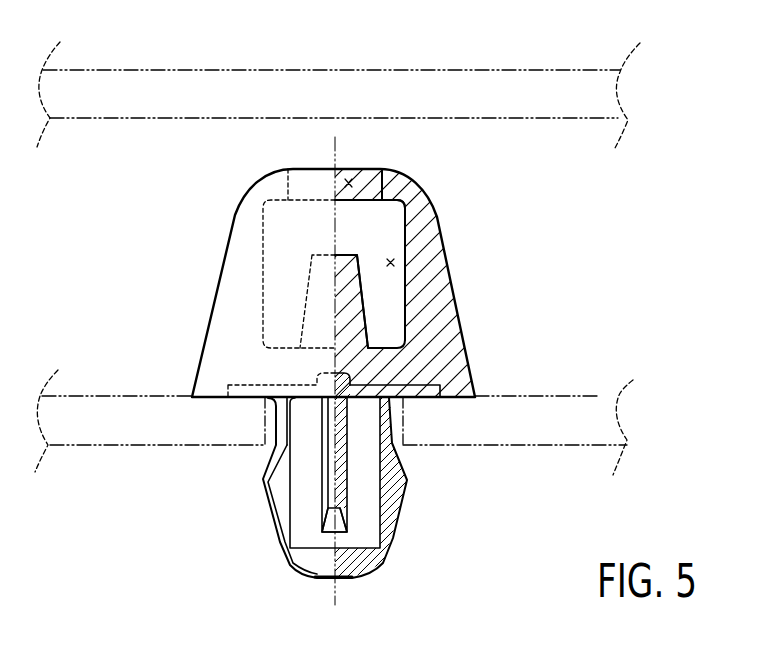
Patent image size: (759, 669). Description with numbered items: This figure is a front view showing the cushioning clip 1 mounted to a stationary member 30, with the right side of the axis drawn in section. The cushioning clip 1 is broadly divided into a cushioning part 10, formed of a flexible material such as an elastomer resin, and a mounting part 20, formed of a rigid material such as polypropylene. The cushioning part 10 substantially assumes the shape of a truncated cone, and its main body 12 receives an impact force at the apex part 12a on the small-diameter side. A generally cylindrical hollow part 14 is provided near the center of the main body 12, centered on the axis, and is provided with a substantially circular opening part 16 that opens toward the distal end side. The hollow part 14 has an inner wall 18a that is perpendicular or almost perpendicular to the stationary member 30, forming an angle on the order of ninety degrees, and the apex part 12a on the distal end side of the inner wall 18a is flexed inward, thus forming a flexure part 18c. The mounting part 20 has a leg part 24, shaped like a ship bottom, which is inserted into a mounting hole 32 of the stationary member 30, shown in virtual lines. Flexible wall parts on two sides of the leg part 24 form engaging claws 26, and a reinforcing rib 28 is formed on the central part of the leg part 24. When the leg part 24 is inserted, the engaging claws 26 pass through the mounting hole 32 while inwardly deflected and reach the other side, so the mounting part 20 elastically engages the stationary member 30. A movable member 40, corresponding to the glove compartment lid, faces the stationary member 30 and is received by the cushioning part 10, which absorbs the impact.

The cushioning clip 1 is at (223, 202).
The cushioning part 10 is at (471, 327).
The main body 12 is at (450, 366).
The apex part 12a is at (391, 190).
The hollow part 14 is at (394, 261).
The opening part 16 is at (351, 177).
The inner wall 18a is at (405, 296).
The flexure part 18c is at (396, 210).
The mounting part 20 is at (399, 536).
The leg part 24 is at (282, 428).
The engaging claws 26 is at (265, 492).
The reinforcing rib 28 is at (323, 512).
The stationary member 30 is at (595, 397).
The mounting hole 32 is at (400, 452).
The movable member 40 is at (533, 70).